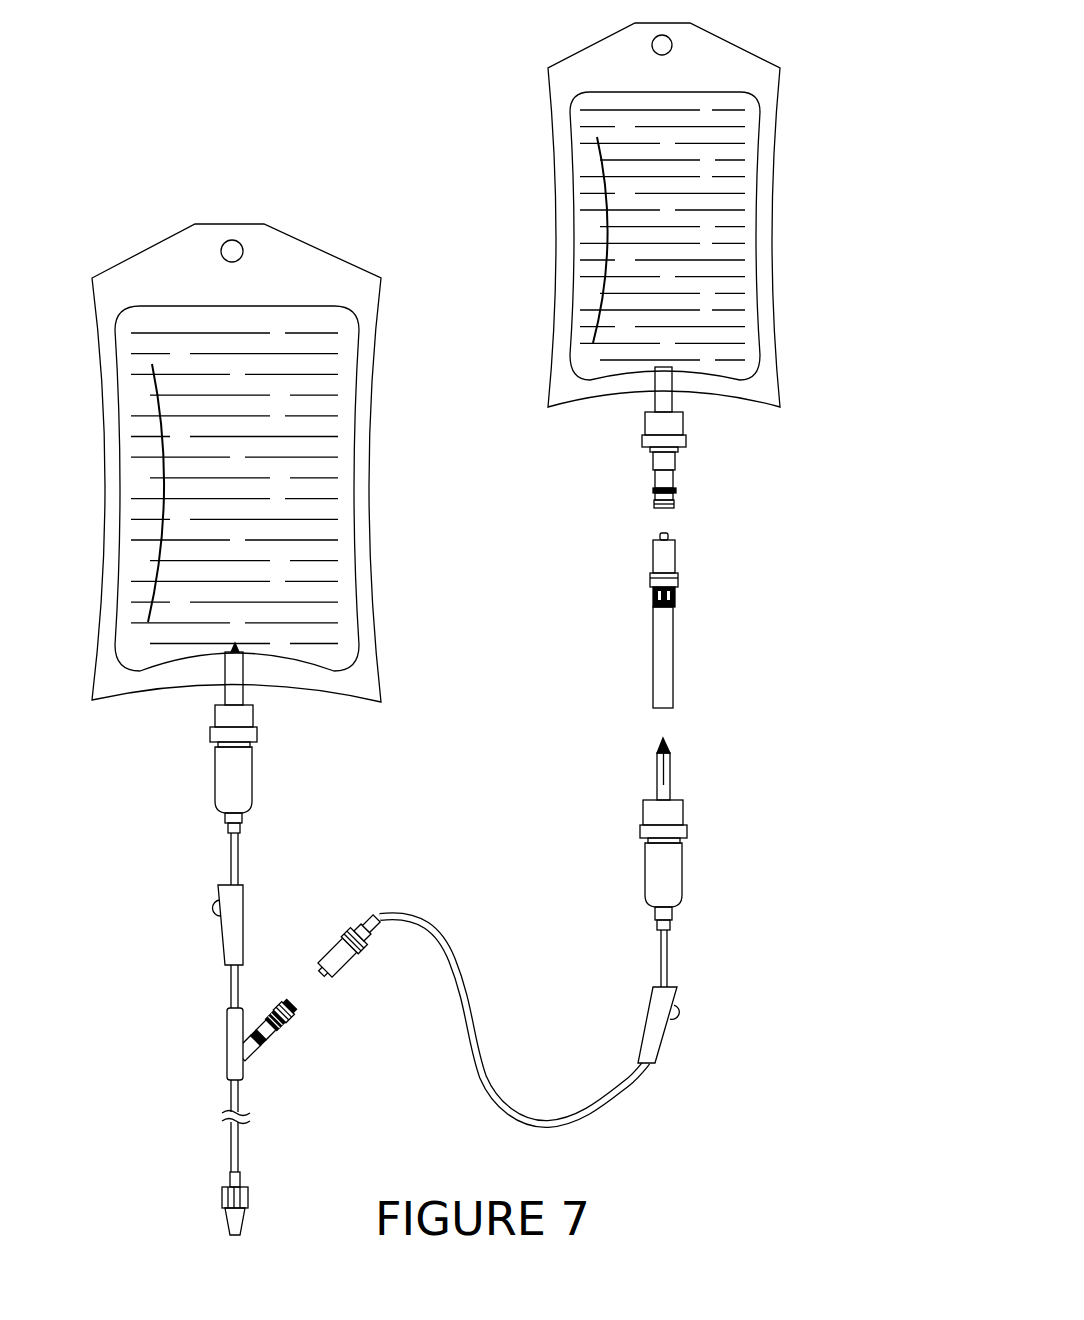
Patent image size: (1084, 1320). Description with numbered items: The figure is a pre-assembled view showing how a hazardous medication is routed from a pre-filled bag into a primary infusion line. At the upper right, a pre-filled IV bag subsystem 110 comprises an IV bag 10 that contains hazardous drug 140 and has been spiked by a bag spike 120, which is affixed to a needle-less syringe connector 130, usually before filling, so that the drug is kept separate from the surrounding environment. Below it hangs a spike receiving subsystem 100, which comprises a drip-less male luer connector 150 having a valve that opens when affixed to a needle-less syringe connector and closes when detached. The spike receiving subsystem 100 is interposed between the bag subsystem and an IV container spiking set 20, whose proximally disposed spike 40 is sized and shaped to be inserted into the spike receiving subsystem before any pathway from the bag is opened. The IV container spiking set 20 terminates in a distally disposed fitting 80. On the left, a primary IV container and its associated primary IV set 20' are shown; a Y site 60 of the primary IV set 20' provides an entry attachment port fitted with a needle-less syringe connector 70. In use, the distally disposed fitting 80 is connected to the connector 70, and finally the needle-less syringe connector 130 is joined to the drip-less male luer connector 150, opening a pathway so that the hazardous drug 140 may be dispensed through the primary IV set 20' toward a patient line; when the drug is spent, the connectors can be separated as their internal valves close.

The IV bag 10 is at (721, 215).
The pre-filled IV bag subsystem 110 is at (713, 265).
The hazardous drug 140 is at (715, 153).
The bag spike 120 is at (666, 367).
The needle-less syringe connector 130 is at (675, 495).
The drip-less male luer connector 150 is at (653, 557).
The spike receiving subsystem 100 is at (675, 650).
The spike 40 is at (672, 773).
The IV container spiking set 20 is at (724, 1015).
The distally disposed fitting 80 is at (343, 970).
The primary IV set 20' is at (297, 902).
The Y site 60 is at (250, 1025).
The needle-less syringe connector 70 is at (277, 1003).